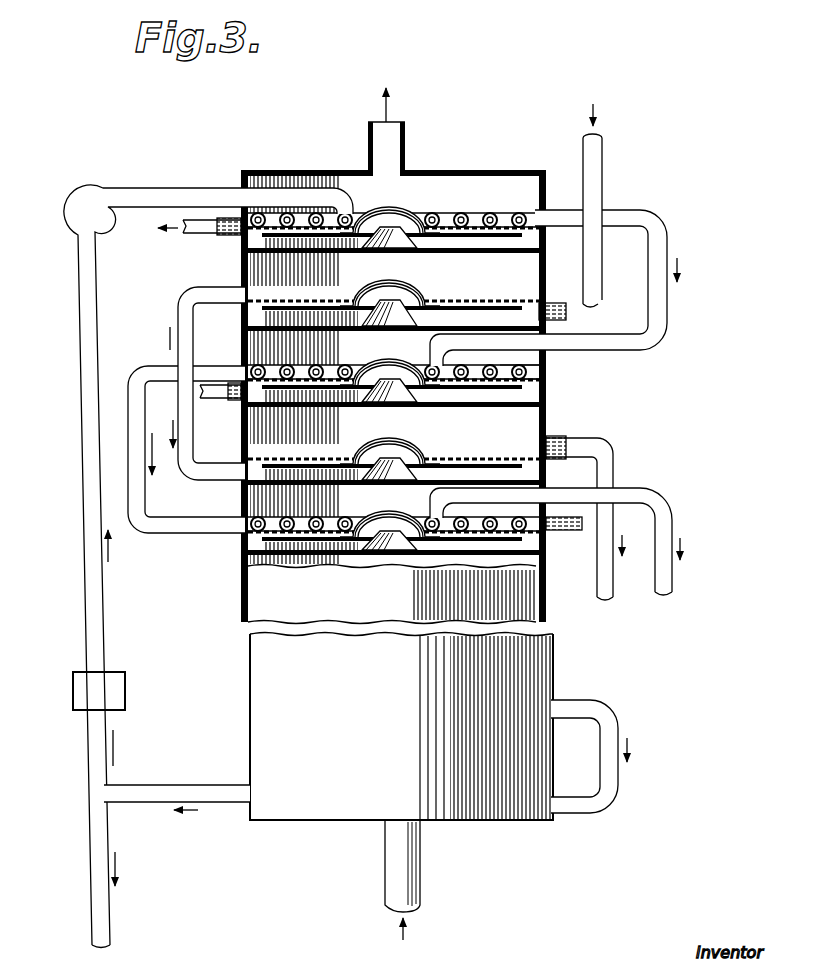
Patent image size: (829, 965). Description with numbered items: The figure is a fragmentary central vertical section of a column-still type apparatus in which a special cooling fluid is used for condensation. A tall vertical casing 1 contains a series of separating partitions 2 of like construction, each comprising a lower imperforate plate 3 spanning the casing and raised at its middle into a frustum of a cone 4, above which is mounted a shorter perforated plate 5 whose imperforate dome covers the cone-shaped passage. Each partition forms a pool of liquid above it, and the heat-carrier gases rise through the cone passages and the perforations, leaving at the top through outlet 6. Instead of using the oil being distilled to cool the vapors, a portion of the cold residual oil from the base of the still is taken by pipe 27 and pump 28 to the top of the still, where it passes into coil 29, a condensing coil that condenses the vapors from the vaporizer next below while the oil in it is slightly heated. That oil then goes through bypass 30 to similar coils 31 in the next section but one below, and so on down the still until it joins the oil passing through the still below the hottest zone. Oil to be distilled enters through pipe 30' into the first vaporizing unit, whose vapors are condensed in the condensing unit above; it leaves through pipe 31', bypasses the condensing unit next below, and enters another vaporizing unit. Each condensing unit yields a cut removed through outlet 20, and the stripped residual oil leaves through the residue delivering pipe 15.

The casing 1 is at (470, 172).
The separating partition 2 is at (541, 305).
The lower imperforate plate 3 is at (497, 240).
The frustum of a cone 4 is at (388, 238).
The perforated plate 5 is at (447, 234).
The outlet 6 is at (395, 142).
The residue delivering pipe 15 is at (183, 790).
The outlet 20 is at (196, 219).
The pipe 27 is at (94, 744).
The pump 28 is at (122, 692).
The coil 29 is at (393, 372).
The bypass 30 is at (578, 288).
The pipe 30' is at (627, 205).
The coil 31 is at (555, 370).
The pipe 31' is at (185, 383).